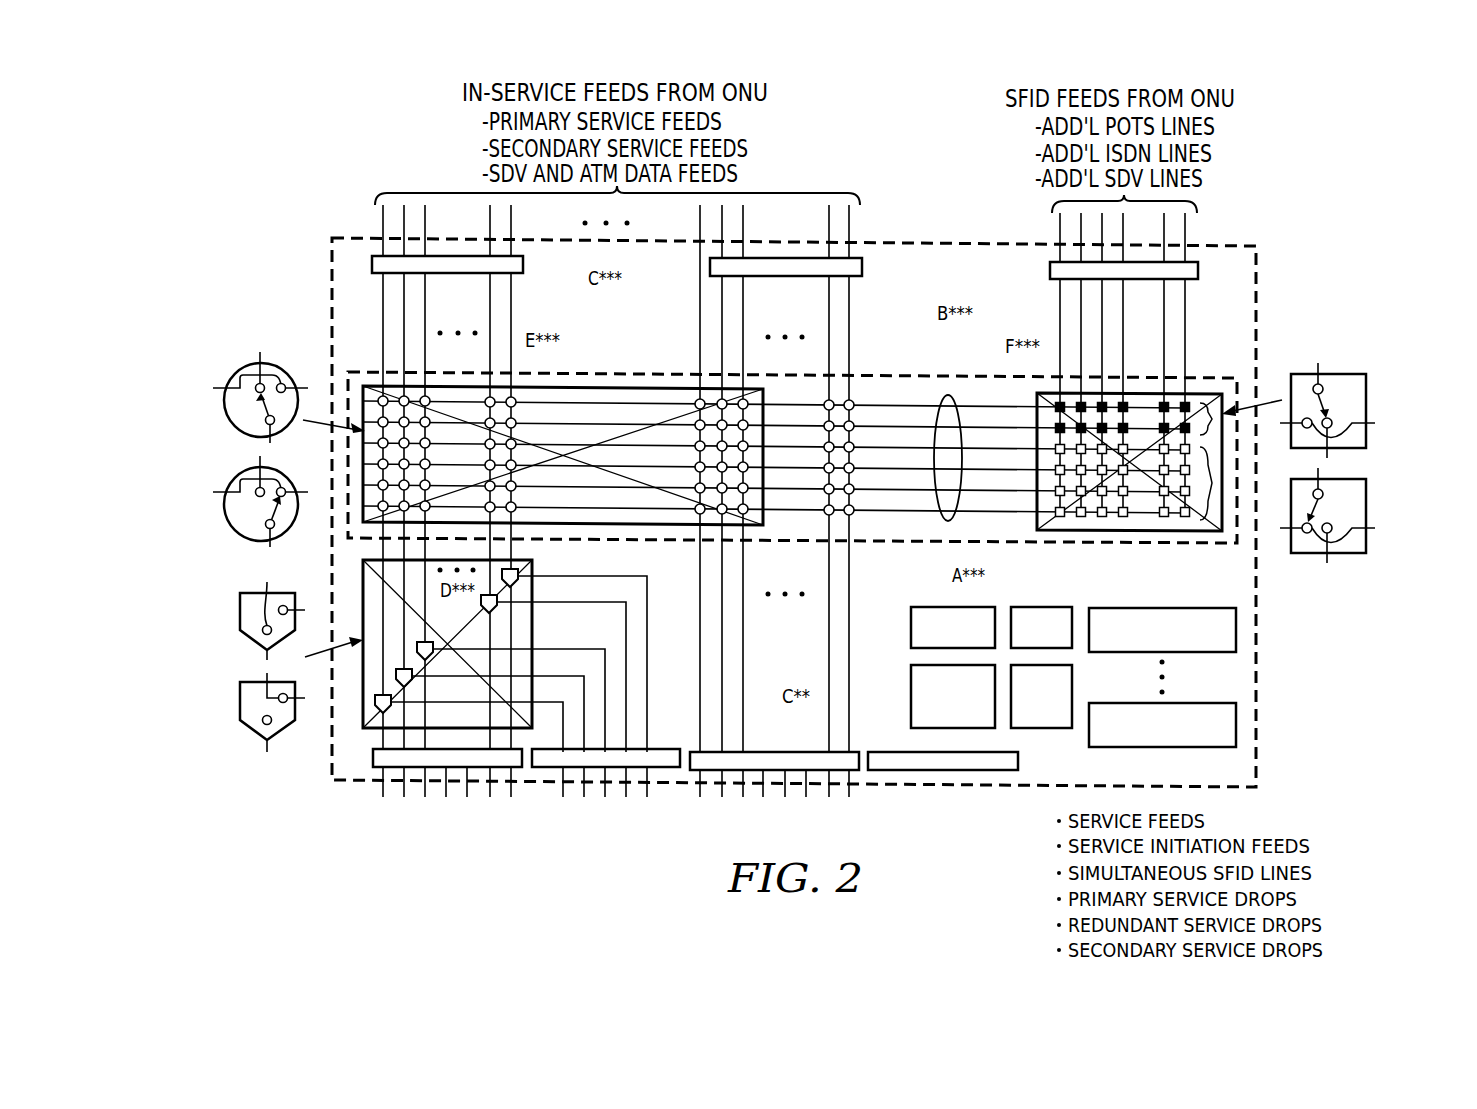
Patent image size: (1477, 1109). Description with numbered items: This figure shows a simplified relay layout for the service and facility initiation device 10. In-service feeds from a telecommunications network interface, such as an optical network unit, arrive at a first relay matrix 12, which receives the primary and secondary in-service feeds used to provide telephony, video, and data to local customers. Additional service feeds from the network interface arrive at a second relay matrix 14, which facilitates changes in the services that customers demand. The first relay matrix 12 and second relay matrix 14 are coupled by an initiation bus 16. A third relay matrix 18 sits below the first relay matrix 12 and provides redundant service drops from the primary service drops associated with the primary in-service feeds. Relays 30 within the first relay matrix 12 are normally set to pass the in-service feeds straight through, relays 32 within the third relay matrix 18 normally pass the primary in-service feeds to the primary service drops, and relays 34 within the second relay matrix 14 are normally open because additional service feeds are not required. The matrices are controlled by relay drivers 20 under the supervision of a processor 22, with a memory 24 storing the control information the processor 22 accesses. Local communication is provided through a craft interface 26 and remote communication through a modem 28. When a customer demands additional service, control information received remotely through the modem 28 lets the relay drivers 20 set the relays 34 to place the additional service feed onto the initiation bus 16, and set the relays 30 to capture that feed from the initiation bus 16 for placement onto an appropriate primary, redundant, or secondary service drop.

The service and facility initiation device 10 is at (1303, 266).
The first relay matrix 12 is at (640, 387).
The second relay matrix 14 is at (1198, 393).
The initiation bus 16 is at (949, 395).
The third relay matrix 18 is at (532, 633).
The relay drivers 20 is at (1163, 608).
The processor 22 is at (1040, 607).
The memory 24 is at (1072, 690).
The craft interface 26 is at (911, 700).
The modem 28 is at (911, 627).
The relays 30 is at (235, 370).
The relays 32 is at (240, 600).
The relays 34 is at (1338, 374).